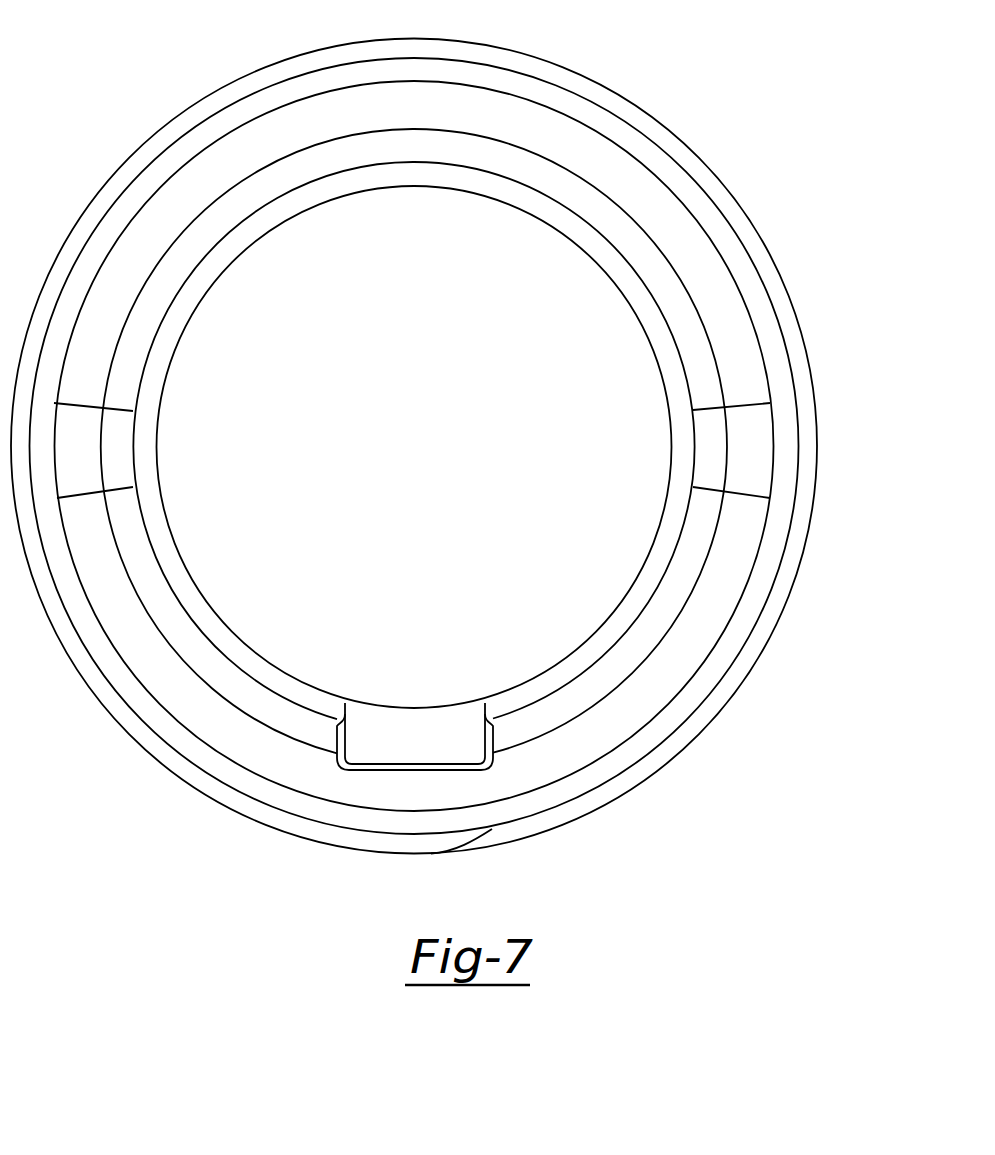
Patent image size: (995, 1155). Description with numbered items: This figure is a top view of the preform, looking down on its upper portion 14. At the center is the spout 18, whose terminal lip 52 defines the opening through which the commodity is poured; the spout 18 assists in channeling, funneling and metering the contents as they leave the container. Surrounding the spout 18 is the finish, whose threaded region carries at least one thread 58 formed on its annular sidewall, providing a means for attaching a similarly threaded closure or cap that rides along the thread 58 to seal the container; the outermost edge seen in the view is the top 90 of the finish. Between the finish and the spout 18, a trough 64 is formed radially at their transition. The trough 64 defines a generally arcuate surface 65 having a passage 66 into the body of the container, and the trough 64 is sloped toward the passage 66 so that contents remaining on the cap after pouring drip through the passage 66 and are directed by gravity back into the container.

The upper portion 14 is at (686, 97).
The spout 18 is at (665, 378).
The terminal lip 52 is at (615, 265).
The thread 58 is at (570, 813).
The trough 64 is at (720, 591).
The arcuate surface 65 is at (708, 615).
The passage 66 is at (406, 726).
The top of the finish 90 is at (753, 292).